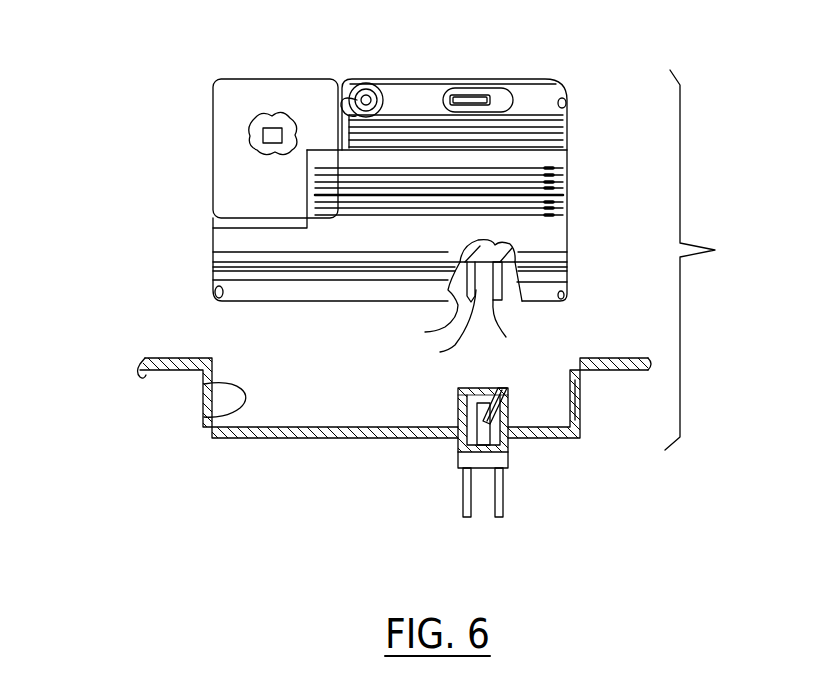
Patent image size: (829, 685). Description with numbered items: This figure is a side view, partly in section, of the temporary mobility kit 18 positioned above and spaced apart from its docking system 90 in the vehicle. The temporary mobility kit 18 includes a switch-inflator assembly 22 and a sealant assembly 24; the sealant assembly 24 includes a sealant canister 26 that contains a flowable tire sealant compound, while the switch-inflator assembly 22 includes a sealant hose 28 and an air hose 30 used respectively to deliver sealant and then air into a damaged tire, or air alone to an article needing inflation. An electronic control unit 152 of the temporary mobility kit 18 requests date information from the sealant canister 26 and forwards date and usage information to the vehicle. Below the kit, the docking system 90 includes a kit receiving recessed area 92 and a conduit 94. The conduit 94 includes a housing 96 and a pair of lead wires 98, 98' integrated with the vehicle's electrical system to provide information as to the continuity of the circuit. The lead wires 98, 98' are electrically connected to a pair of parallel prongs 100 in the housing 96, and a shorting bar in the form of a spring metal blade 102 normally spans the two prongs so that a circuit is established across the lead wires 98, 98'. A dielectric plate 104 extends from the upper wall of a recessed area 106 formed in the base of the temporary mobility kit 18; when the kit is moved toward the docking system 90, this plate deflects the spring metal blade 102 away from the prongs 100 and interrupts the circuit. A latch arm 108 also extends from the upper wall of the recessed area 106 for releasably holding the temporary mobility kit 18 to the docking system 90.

The temporary mobility kit 18 is at (427, 85).
The switch-inflator assembly 22 is at (557, 96).
The sealant assembly 24 is at (263, 97).
The sealant canister 26 is at (232, 145).
The sealant hose 28 is at (214, 258).
The air hose 30 is at (213, 273).
The docking system 90 is at (293, 431).
The kit receiving recessed area 92 is at (213, 416).
The conduit 94 is at (581, 432).
The housing 96 is at (458, 443).
The lead wire 98 is at (424, 510).
The lead wire 98' is at (530, 497).
The parallel prongs 100 is at (477, 413).
The spring metal blade 102 is at (488, 416).
The dielectric plate 104 is at (507, 337).
The recessed area 106 is at (425, 332).
The latch arm 108 is at (440, 352).
The electronic control unit 152 is at (500, 92).